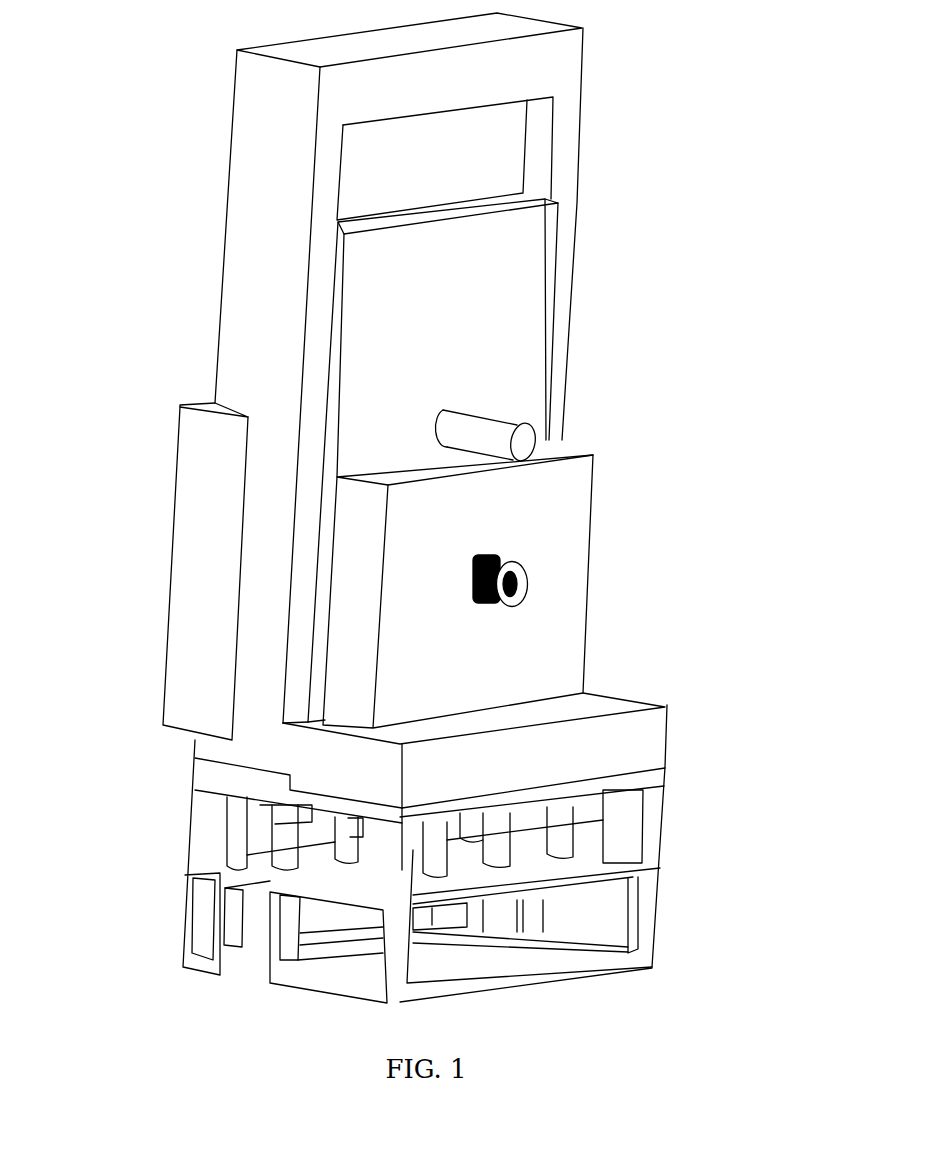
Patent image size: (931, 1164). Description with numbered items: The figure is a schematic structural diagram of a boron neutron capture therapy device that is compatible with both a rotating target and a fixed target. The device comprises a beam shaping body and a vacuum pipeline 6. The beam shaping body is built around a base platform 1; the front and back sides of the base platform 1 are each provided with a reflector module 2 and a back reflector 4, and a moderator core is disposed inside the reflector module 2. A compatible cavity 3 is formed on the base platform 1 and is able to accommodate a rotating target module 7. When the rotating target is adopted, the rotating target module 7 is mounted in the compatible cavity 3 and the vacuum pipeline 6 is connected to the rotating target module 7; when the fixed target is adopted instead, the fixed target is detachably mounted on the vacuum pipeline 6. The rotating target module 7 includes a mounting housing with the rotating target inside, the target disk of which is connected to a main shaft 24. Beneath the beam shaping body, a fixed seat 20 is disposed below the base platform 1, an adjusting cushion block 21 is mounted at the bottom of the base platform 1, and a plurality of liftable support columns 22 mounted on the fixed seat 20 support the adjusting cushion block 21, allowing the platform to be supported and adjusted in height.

The base platform 1 is at (277, 302).
The reflector module 2 is at (192, 543).
The compatible cavity 3 is at (485, 148).
The back reflector 4 is at (527, 668).
The vacuum pipeline 6 is at (510, 555).
The rotating target module 7 is at (460, 370).
The fixed seat 20 is at (250, 878).
The adjusting cushion block 21 is at (250, 780).
The support columns 22 is at (275, 839).
The main shaft 24 is at (477, 435).